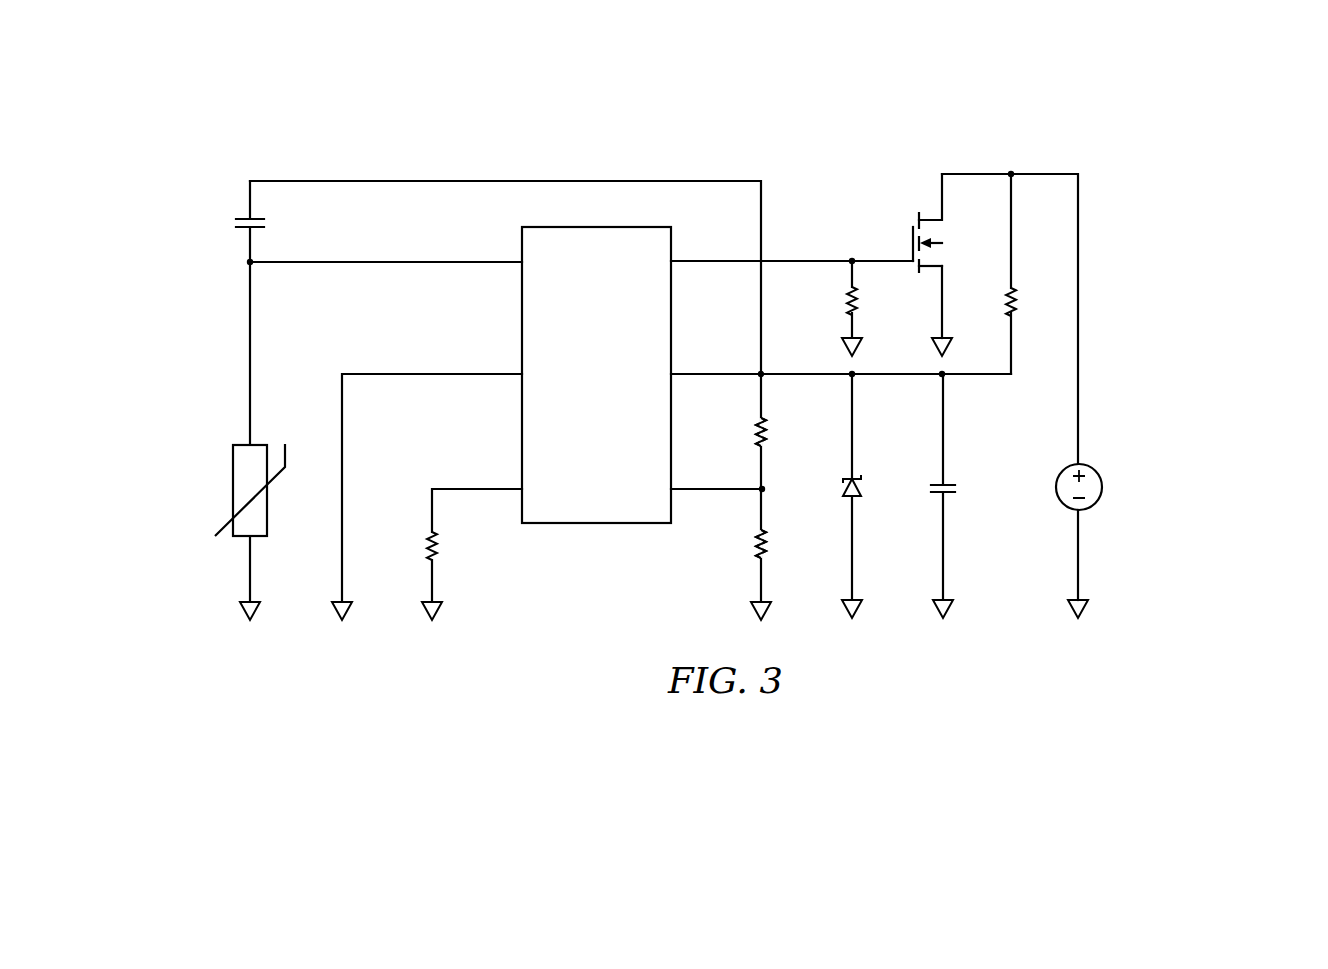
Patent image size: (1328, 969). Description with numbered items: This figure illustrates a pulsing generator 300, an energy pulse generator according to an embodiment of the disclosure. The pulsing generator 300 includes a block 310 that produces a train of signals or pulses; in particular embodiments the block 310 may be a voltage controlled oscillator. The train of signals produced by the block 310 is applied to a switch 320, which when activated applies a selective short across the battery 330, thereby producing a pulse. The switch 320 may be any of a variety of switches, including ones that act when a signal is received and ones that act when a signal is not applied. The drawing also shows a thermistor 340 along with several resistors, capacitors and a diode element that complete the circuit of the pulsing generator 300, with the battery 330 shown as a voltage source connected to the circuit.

The pulsing generator 300 is at (730, 364).
The block 310 is at (595, 523).
The switch 320 is at (913, 232).
The battery 330 is at (1102, 487).
The thermistor 340 is at (233, 490).